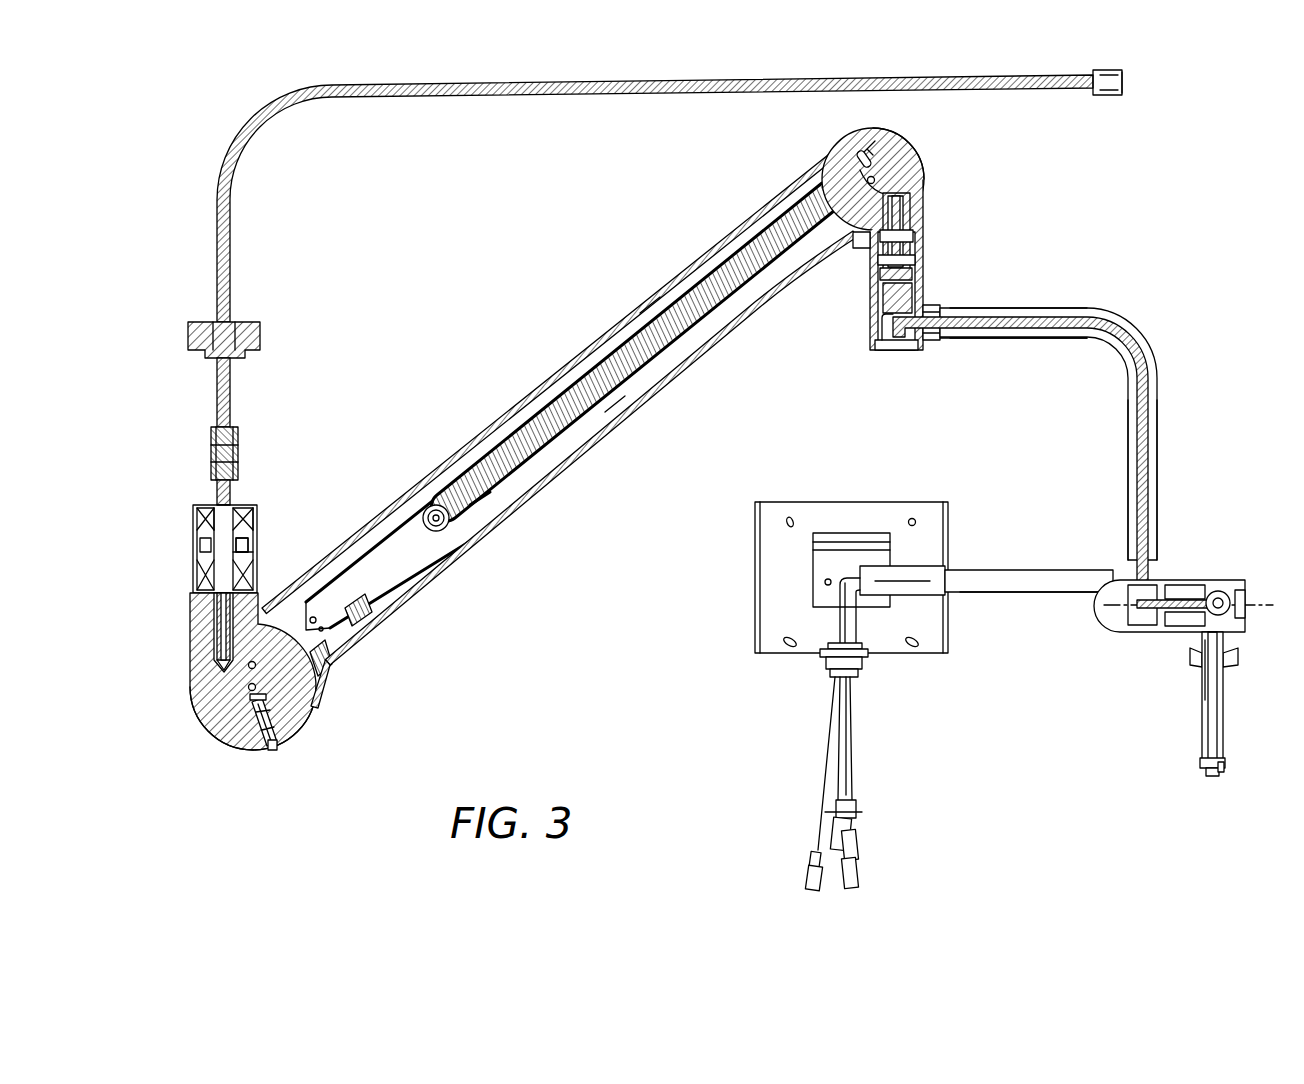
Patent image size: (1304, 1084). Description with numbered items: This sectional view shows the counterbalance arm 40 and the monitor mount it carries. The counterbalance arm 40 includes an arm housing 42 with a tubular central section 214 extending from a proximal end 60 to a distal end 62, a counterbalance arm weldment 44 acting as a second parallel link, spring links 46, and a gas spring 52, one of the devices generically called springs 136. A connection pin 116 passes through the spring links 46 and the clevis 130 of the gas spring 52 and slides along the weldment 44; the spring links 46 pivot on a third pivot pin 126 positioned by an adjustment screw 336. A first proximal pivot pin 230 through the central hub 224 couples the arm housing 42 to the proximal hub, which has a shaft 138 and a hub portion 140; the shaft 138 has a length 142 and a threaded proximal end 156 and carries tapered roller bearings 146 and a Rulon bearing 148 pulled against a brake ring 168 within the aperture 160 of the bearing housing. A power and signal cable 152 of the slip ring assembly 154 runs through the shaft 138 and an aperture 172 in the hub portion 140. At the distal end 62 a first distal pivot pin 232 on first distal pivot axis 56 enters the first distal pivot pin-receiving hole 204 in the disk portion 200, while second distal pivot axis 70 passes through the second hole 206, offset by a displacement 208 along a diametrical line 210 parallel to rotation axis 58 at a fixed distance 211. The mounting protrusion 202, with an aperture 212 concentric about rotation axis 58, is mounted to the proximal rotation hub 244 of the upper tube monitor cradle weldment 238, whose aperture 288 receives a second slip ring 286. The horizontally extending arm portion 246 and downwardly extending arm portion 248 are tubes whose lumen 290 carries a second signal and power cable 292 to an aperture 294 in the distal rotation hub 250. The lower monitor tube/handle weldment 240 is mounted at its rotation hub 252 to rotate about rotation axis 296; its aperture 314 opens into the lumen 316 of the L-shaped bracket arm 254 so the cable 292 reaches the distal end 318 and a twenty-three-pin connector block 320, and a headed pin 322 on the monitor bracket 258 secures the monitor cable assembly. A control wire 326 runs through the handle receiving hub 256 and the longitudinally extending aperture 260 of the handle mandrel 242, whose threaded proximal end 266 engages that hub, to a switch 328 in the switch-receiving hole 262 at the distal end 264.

The counterbalance arm 40 is at (576, 504).
The arm housing 42 is at (580, 348).
The counterbalance arm weldment 44 is at (400, 533).
The spring links 46 is at (335, 655).
The gas spring 52 is at (585, 420).
The first distal pivot axis 56 is at (868, 181).
The rotation axis 58 is at (898, 398).
The proximal end 60 is at (228, 750).
The distal end 62 is at (880, 132).
The second distal pivot axis 70 is at (878, 103).
The connection pin 116 is at (480, 500).
The third pivot pin 126 is at (278, 722).
The clevis 130 is at (433, 505).
The springs 136 is at (618, 400).
The shaft 138 is at (240, 515).
The hub portion 140 is at (233, 698).
The length 142 is at (155, 505).
The tapered roller bearings 146 is at (255, 518).
The Rulon bearing 148 is at (250, 541).
The power and signal cable 152 is at (222, 610).
The slip ring assembly 154 is at (265, 122).
The proximal end 156 is at (238, 500).
The aperture 160 is at (200, 565).
The brake ring 168 is at (250, 555).
The aperture 172 is at (216, 660).
The disk portion 200 is at (905, 140).
The mounting protrusion 202 is at (918, 222).
The first distal pivot pin-receiving hole 204 is at (857, 248).
The second distal pivot pin-receiving hole 206 is at (862, 156).
The displacement 208 is at (873, 157).
The diametrical line 210 is at (898, 410).
The offset center line 211 is at (890, 425).
The aperture 212 is at (912, 214).
The tubular central section 214 is at (655, 290).
The central hub 224 is at (248, 687).
The first proximal pivot pin 230 is at (248, 695).
The first distal pivot pin 232 is at (866, 178).
The upper tube monitor cradle weldment 238 is at (1045, 308).
The lower monitor tube/handle weldment 240 is at (1020, 597).
The handle mandrel 242 is at (1223, 718).
The proximal rotation hub 244 is at (928, 306).
The horizontally extending arm portion 246 is at (1010, 340).
The downwardly extending arm portion 248 is at (1158, 486).
The distal rotation hub 250 is at (1145, 637).
The rotation hub 252 is at (1230, 580).
The L-shaped bracket arm 254 is at (995, 577).
The handle receiving hub 256 is at (1235, 655).
The monitor bracket 258 is at (930, 652).
The longitudinally extending aperture 260 is at (1204, 725).
The switch-receiving hole 262 is at (1222, 775).
The distal end 264 is at (1198, 770).
The proximal end 266 is at (1193, 645).
The second slip ring 286 is at (872, 306).
The aperture 288 is at (873, 340).
The lumen 290 is at (1108, 313).
The second signal and power cable 292 is at (1148, 345).
The aperture 294 is at (1140, 616).
The rotation axis 296 is at (1258, 590).
The aperture 314 is at (1248, 628).
The lumen 316 is at (1212, 592).
The distal end 318 is at (858, 565).
The 23-pin connector block 320 is at (830, 645).
The headed pin 322 is at (820, 662).
The control wire 326 is at (822, 747).
The switch 328 is at (1209, 778).
The adjustment screw 336 is at (275, 748).